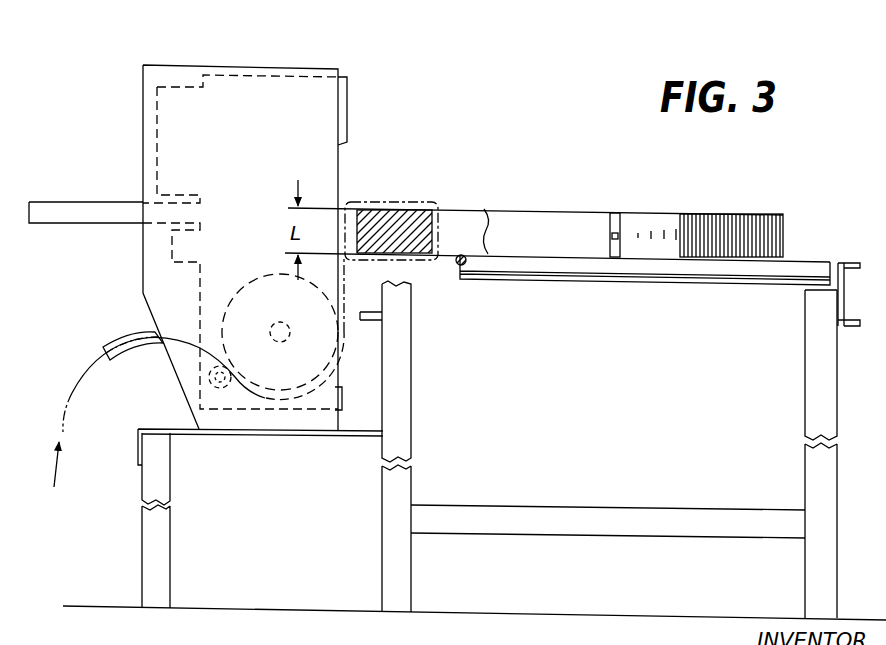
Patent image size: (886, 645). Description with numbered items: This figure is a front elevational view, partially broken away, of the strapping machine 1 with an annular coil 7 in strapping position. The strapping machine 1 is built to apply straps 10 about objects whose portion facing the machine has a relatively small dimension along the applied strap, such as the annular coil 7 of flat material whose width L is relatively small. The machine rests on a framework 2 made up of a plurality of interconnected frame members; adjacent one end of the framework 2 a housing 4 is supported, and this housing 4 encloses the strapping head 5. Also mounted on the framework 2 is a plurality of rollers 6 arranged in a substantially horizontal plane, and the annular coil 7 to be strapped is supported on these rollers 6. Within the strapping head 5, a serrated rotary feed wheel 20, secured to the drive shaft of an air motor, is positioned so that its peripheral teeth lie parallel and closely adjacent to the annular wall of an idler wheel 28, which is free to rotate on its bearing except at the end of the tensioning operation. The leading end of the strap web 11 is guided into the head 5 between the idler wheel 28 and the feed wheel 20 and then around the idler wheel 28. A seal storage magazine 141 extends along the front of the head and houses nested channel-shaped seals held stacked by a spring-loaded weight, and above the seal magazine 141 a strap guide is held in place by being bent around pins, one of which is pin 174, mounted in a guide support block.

The strapping machine 1 is at (463, 156).
The framework 2 is at (449, 578).
The housing 4 is at (143, 90).
The strapping head 5 is at (253, 124).
The rollers 6 is at (692, 284).
The annular coil 7 is at (682, 214).
The strap 10 is at (616, 213).
The strap web 11 is at (398, 202).
The rotary feed wheel 20 is at (208, 388).
The idler wheel 28 is at (263, 272).
The seal storage magazine 141 is at (83, 201).
The pin 174 is at (115, 338).